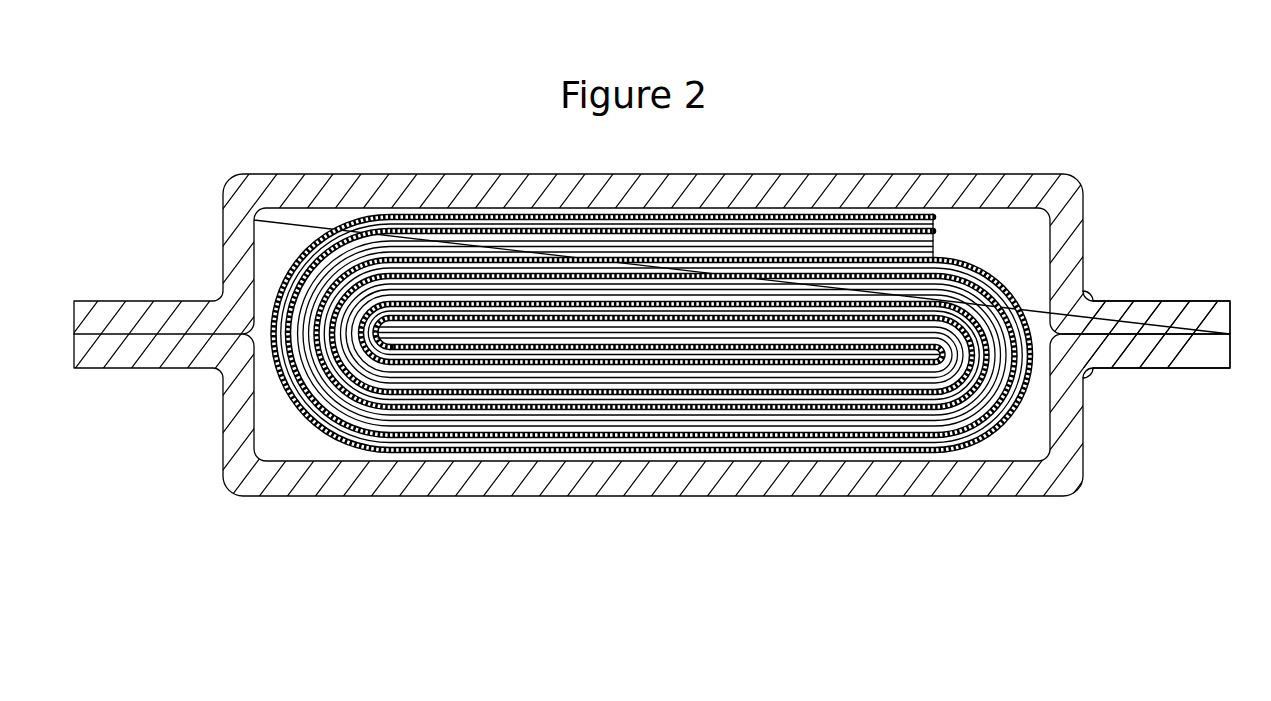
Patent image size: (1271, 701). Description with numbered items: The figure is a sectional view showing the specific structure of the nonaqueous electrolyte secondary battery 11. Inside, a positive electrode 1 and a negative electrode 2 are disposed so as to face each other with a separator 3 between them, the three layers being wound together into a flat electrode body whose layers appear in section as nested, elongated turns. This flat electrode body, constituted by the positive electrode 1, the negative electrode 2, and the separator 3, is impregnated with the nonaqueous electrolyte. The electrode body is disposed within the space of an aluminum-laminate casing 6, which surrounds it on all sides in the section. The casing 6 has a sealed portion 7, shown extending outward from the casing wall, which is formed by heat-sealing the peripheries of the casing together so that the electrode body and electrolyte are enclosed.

The positive electrode 1 is at (921, 254).
The negative electrode 2 is at (943, 228).
The separator 3 is at (872, 203).
The aluminum-laminate casing 6 is at (1065, 163).
The sealed portion 7 is at (1159, 301).
The nonaqueous electrolyte secondary battery 11 is at (1167, 106).